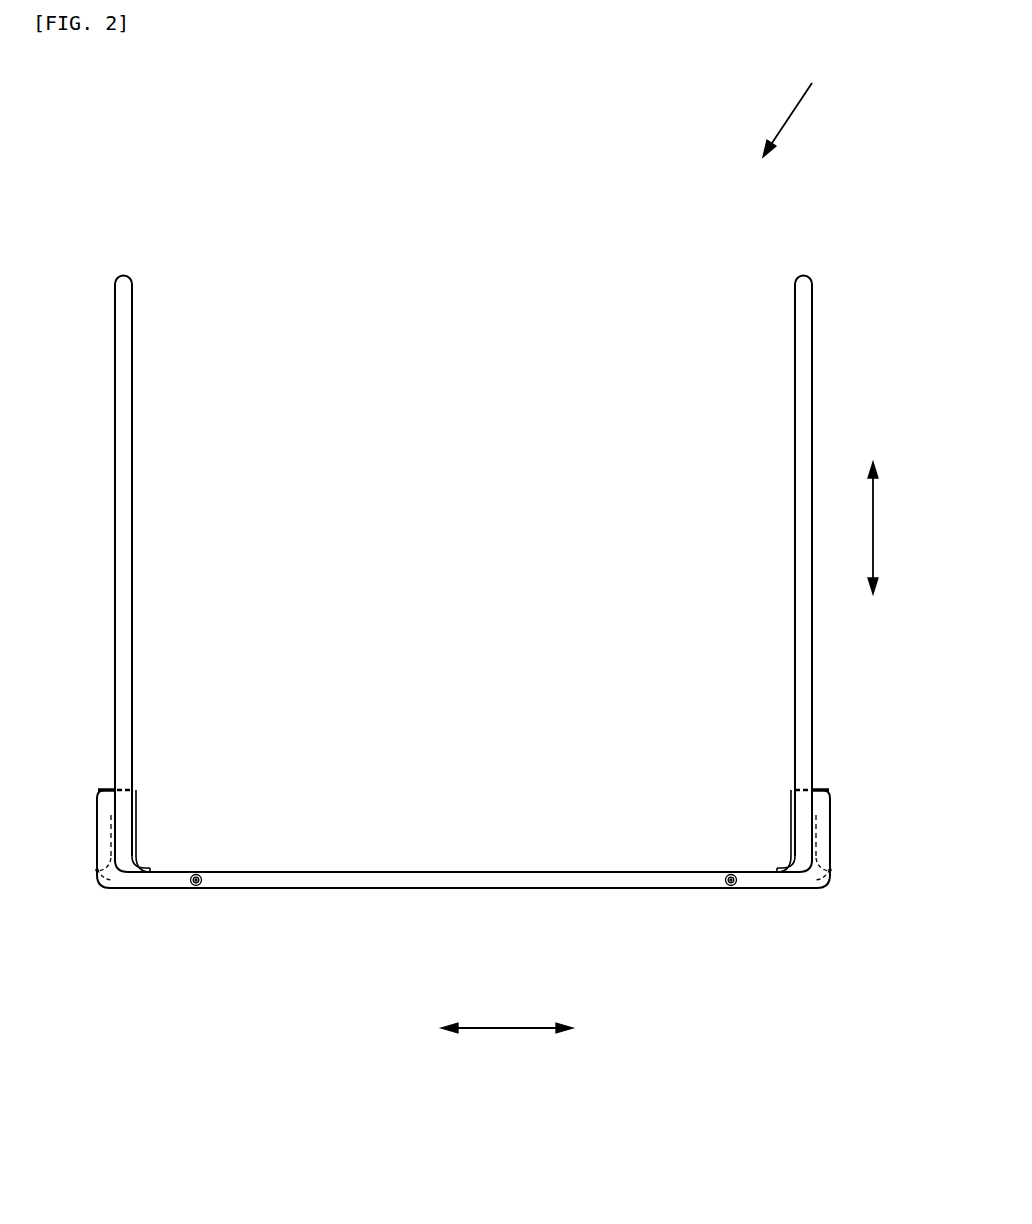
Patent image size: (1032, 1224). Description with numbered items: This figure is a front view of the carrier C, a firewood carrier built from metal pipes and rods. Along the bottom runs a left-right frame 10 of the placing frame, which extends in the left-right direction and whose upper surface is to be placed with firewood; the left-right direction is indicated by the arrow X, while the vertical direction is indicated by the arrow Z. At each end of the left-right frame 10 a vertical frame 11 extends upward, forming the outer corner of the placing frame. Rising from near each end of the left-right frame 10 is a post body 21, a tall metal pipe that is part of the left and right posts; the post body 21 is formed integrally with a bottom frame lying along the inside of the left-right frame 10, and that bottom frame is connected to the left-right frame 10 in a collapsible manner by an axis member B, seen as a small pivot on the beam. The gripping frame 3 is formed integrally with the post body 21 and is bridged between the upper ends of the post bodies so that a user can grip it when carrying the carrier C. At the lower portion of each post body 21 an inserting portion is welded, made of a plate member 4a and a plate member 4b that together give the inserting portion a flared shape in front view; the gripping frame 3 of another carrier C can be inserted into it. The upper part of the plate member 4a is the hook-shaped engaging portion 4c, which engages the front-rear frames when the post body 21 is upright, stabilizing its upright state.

The gripping frame 3 is at (463, 549).
The post body 21 is at (122, 492).
The left-right frame 10 is at (427, 878).
The vertical frame 11 is at (103, 821).
The plate member 4a is at (135, 815).
The plate member 4b is at (104, 879).
The engaging portion 4c is at (112, 788).
The axis member B is at (193, 888).
The carrier C is at (796, 106).
The Z direction Z is at (875, 528).
The X direction X is at (507, 1027).